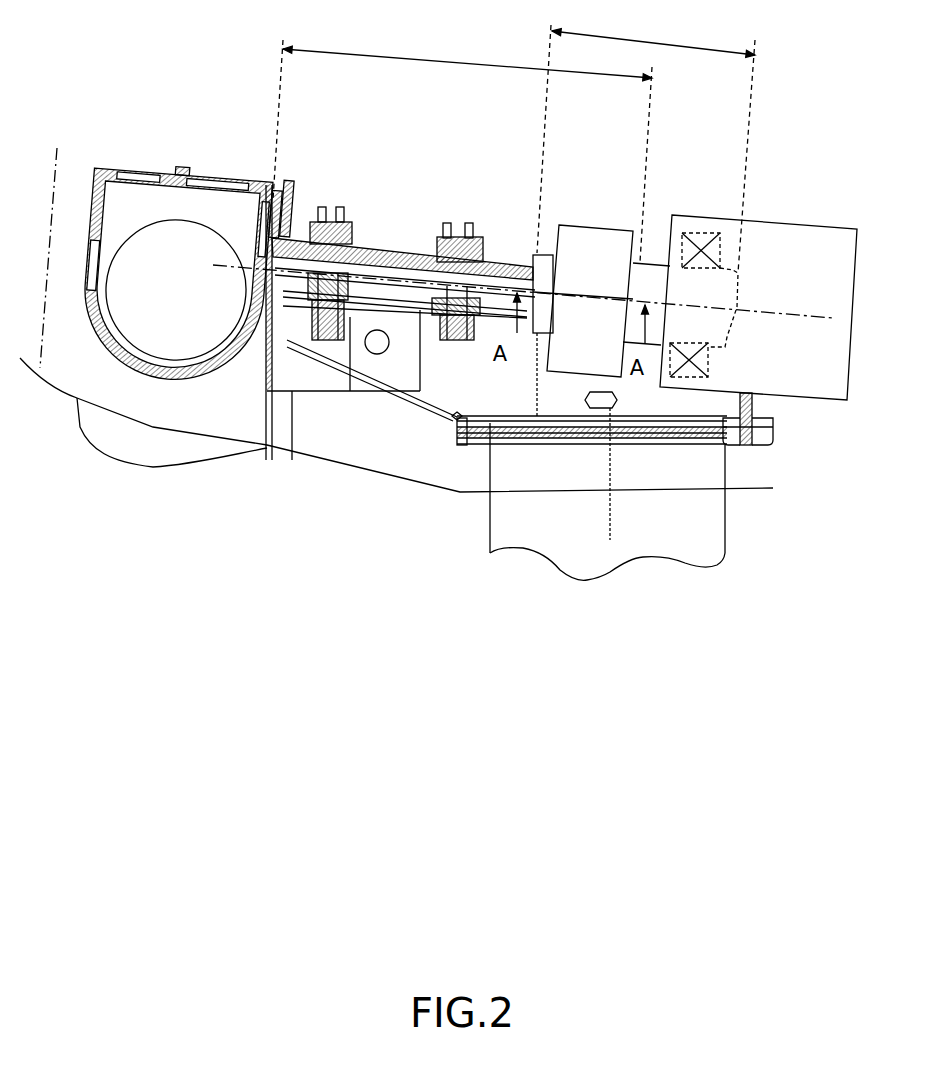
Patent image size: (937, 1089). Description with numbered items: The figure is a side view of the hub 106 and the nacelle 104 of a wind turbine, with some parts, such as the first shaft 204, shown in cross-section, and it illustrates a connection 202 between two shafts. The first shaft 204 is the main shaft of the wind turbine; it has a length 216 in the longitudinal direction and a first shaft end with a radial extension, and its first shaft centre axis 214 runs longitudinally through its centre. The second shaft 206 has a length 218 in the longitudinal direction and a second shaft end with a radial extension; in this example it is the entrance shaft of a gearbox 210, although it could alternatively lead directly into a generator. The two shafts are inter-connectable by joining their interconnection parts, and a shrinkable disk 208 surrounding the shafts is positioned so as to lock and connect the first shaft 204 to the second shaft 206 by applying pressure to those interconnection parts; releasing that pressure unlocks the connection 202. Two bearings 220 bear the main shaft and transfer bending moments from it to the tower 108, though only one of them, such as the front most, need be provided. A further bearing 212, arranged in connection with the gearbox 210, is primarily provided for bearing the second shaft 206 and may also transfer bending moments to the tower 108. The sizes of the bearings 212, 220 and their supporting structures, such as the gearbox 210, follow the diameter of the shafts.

The nacelle 104 is at (280, 473).
The hub 106 is at (136, 118).
The tower 108 is at (728, 503).
The connection 202 is at (525, 360).
The first shaft 204 is at (374, 240).
The second shaft 206 is at (655, 260).
The shrinkable disk 208 is at (594, 225).
The gearbox 210 is at (806, 222).
The bearing 212 is at (752, 400).
The first shaft centre axis 214 is at (249, 267).
The length 216 is at (479, 63).
The length 218 is at (669, 45).
The bearings 220 is at (437, 327).